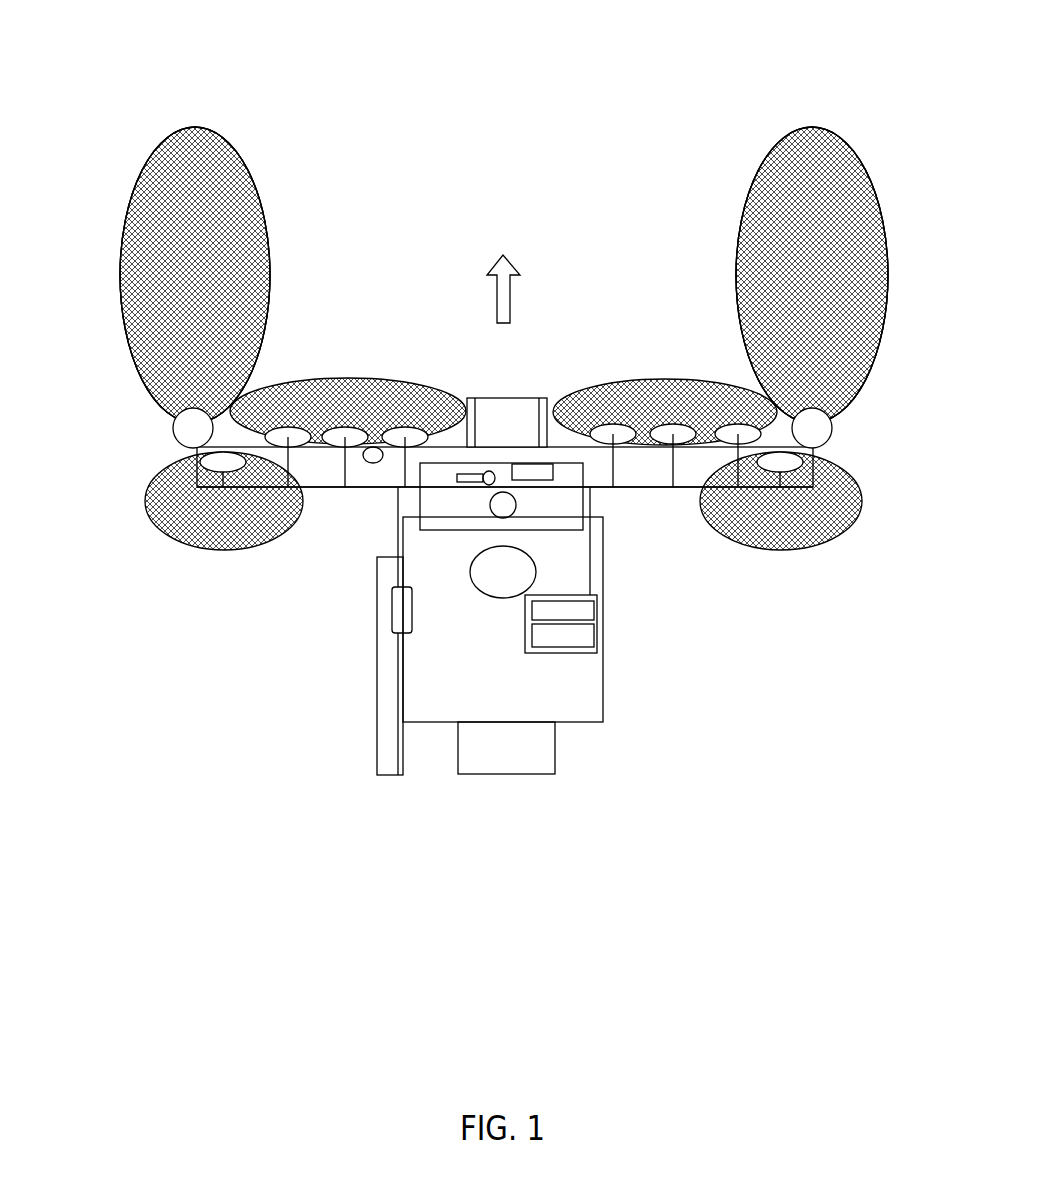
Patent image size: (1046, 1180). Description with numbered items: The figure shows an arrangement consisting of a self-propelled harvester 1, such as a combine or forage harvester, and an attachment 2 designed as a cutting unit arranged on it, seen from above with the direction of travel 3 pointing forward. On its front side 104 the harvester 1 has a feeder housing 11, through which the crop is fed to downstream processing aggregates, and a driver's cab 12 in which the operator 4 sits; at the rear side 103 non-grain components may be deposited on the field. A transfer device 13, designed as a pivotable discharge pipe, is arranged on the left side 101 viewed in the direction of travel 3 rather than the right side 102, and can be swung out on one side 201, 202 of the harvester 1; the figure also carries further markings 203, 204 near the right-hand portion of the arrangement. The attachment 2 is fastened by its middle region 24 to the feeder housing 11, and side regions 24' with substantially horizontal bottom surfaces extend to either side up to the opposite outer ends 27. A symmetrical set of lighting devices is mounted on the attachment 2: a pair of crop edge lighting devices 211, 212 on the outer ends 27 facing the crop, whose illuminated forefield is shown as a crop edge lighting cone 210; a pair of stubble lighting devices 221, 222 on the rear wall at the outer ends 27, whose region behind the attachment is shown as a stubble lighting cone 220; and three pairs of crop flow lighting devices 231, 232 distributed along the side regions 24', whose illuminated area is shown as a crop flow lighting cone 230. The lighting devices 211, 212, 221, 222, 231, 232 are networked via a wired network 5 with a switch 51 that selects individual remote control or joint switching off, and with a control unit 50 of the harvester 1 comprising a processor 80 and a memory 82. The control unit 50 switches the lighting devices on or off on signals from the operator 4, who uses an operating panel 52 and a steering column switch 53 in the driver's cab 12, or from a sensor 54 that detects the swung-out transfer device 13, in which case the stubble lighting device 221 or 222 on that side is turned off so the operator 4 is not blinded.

The self-propelled harvester 1 is at (600, 685).
The attachment 2 is at (535, 405).
The direction of travel 3 is at (492, 262).
The operator 4 is at (500, 510).
The wired network 5 is at (693, 487).
The feeder housing 11 is at (553, 455).
The driver's cab 12 is at (423, 493).
The transfer device 13 is at (385, 680).
The middle region 24 is at (505, 375).
The side regions 24' is at (505, 547).
The outer ends 27 is at (206, 565).
The control unit 50 is at (597, 602).
The switch 51 is at (366, 465).
The operating panel 52 is at (528, 477).
The steering column switch 53 is at (468, 470).
The sensor 54 is at (398, 610).
The processor 80 is at (597, 622).
The memory 82 is at (597, 647).
The left side 101 is at (186, 112).
The right side 102 is at (810, 112).
The rear side 103 is at (504, 790).
The front side 104 is at (659, 461).
The side of the harvester 201 is at (186, 112).
The side of the harvester 202 is at (810, 112).
The lower pad 203 is at (766, 603).
The upper region 204 is at (647, 258).
The crop edge lighting cone 210 is at (176, 170).
The lighting device 211 is at (173, 428).
The lighting device 212 is at (832, 428).
The stubble lighting cone 220 is at (150, 498).
The lighting device 221 is at (200, 462).
The lighting device 222 is at (803, 462).
The crop flow lighting cone 230 is at (413, 403).
The lighting devices 231 is at (400, 430).
The lighting devices 232 is at (740, 428).